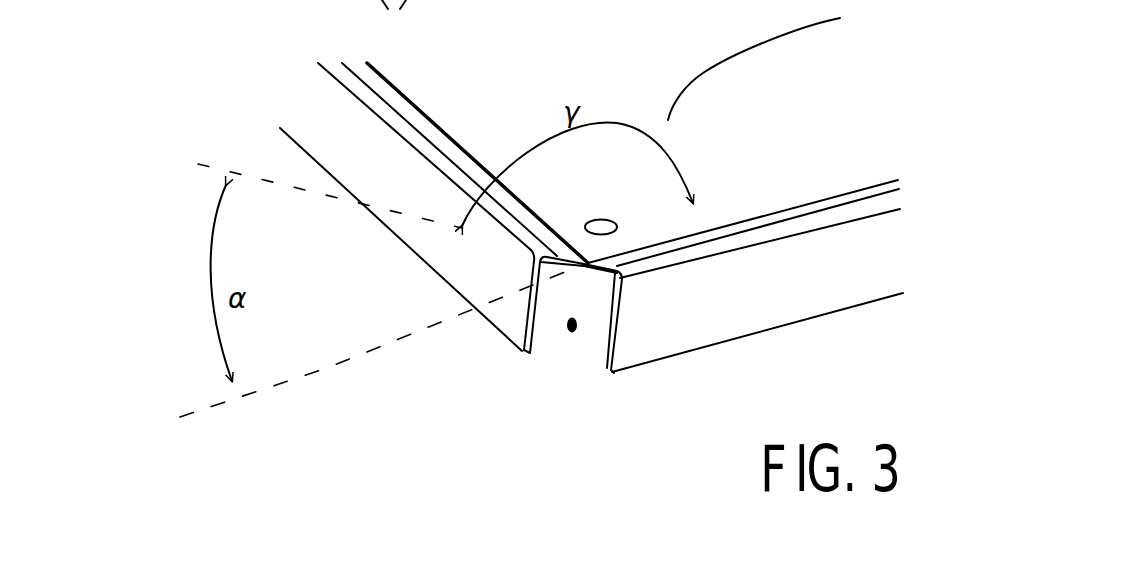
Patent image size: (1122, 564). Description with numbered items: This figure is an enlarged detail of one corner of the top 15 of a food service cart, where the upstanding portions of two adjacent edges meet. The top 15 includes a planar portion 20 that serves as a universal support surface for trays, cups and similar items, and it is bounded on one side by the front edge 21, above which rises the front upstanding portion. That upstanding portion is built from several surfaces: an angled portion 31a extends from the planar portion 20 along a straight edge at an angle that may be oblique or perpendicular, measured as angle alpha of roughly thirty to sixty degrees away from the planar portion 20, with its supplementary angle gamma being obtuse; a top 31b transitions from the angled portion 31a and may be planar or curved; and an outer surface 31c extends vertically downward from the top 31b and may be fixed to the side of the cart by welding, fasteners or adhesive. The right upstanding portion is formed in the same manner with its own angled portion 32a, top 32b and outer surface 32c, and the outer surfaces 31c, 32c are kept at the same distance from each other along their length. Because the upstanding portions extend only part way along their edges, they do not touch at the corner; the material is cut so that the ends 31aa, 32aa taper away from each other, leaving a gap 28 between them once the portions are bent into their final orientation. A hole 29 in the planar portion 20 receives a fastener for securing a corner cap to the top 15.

The top 15 is at (777, 60).
The planar portion 20 is at (710, 183).
The front edge 21 is at (700, 220).
The gap 28 is at (574, 331).
The hole 29 is at (601, 219).
The angled portion 31a is at (787, 217).
The top 31b is at (853, 203).
The outer surface 31c is at (803, 282).
The end 31aa is at (605, 267).
The angled portion 32a is at (306, 203).
The top 32b is at (467, 192).
The outer surface 32c is at (463, 273).
The end 32aa is at (562, 263).